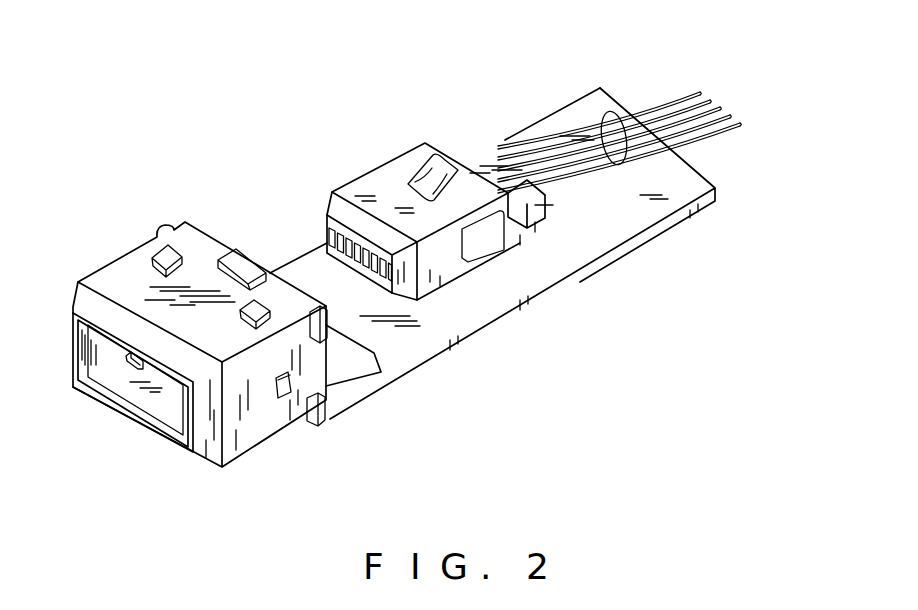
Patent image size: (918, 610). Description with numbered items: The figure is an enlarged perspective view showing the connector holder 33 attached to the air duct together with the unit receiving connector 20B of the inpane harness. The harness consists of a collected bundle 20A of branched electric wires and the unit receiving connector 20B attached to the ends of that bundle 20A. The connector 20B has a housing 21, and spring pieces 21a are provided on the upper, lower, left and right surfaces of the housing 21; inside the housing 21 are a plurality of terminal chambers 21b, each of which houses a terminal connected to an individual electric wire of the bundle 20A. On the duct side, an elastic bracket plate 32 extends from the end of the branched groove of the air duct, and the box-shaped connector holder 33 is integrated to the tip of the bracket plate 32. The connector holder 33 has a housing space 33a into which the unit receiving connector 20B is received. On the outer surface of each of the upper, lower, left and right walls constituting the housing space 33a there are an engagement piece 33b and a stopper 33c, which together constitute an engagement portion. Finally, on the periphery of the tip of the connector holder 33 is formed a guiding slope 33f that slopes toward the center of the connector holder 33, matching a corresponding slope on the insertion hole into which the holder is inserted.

The electric wire bundle 20A is at (609, 112).
The unit receiving connector 20B is at (399, 231).
The housing 21 is at (442, 265).
The spring pieces 21a is at (484, 222).
The terminal chambers 21b is at (328, 244).
The elastic bracket plate 32 is at (415, 340).
The connector holder 33 is at (194, 353).
The housing space 33a is at (148, 390).
The engagement piece 33b is at (250, 310).
The stopper 33c is at (240, 258).
The guiding slope 33f is at (206, 410).